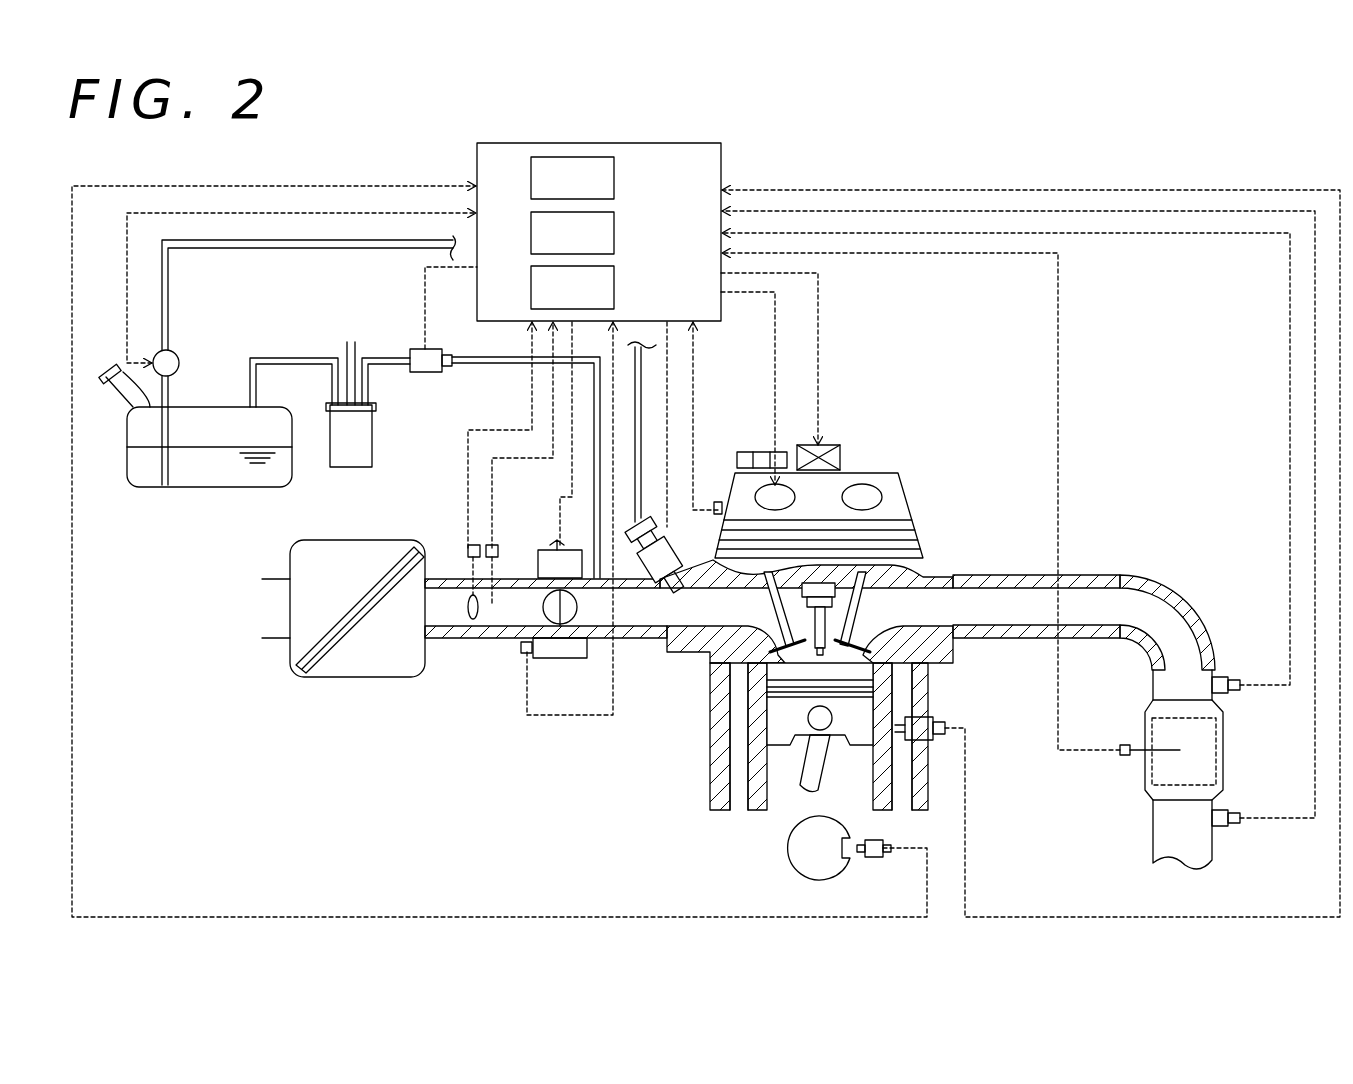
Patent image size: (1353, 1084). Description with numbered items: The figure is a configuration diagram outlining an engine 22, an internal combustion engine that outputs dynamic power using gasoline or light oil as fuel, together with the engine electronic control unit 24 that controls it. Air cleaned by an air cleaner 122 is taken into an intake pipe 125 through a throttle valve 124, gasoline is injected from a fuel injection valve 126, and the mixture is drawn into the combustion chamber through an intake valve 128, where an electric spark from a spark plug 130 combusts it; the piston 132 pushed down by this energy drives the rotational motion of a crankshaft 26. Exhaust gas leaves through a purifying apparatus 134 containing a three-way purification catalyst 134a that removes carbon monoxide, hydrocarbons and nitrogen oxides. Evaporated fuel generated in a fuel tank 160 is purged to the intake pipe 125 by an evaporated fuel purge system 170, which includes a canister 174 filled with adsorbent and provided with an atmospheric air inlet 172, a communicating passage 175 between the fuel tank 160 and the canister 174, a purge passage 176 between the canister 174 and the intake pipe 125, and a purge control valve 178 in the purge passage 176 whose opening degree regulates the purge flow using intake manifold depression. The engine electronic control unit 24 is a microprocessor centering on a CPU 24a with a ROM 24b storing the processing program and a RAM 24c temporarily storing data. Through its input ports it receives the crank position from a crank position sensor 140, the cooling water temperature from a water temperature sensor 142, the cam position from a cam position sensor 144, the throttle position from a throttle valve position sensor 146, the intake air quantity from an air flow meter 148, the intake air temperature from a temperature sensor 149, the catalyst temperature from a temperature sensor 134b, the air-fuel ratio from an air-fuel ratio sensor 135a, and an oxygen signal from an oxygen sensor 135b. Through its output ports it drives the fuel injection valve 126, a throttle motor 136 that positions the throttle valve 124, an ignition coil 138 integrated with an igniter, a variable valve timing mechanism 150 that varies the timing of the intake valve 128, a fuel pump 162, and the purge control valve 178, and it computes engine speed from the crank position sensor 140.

The engine 22 is at (808, 584).
The engine electronic control unit 24 is at (599, 143).
The CPU 24a is at (616, 178).
The ROM 24b is at (616, 233).
The RAM 24c is at (616, 288).
The crankshaft 26 is at (787, 848).
The air cleaner 122 is at (360, 540).
The throttle valve 124 is at (545, 608).
The intake pipe 125 is at (620, 642).
The fuel injection valve 126 is at (638, 598).
The intake valve 128 is at (772, 636).
The spark plug 130 is at (870, 614).
The piston 132 is at (780, 727).
The purifying apparatus 134 is at (1145, 780).
The purification catalyst 134a is at (1145, 760).
The temperature sensor 134b is at (1125, 745).
The air-fuel ratio sensor 135a is at (1225, 677).
The oxygen sensor 135b is at (1222, 830).
The throttle motor 136 is at (555, 545).
The ignition coil 138 is at (820, 443).
The crank position sensor 140 is at (875, 860).
The water temperature sensor 142 is at (936, 717).
The cam position sensor 144 is at (720, 500).
The throttle valve position sensor 146 is at (563, 660).
The air flow meter 148 is at (468, 550).
The temperature sensor 149 is at (496, 550).
The variable valve timing mechanism 150 is at (910, 525).
The fuel tank 160 is at (210, 405).
The fuel pump 162 is at (172, 352).
The evaporated fuel purge system 170 is at (373, 365).
The atmospheric air inlet 172 is at (346, 362).
The canister 174 is at (372, 422).
The communicating passage 175 is at (256, 358).
The purge passage 176 is at (500, 368).
The purge control valve 178 is at (420, 349).